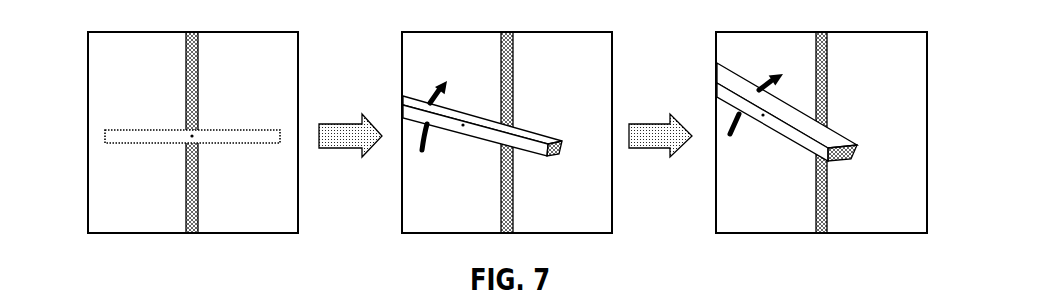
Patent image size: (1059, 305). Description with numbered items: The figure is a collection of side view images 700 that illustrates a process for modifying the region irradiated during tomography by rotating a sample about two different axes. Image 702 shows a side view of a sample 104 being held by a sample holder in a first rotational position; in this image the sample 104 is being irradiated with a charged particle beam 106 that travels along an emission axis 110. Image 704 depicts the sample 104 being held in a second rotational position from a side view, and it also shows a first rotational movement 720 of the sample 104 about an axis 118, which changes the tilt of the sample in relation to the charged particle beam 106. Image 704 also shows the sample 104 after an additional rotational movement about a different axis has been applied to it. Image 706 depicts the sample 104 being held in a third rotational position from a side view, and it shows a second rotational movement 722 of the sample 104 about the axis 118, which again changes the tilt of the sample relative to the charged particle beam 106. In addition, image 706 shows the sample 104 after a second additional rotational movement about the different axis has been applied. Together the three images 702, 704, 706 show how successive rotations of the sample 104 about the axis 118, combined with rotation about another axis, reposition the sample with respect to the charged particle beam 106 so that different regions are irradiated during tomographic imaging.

The collection of side view images 700 is at (88, 16).
The image 702 is at (286, 19).
The image 704 is at (604, 18).
The image 706 is at (919, 18).
The charged particle beam 106 is at (202, 83).
The sample 104 is at (247, 129).
The emission axis 110 is at (192, 48).
The axis 118 is at (463, 127).
The first rotational movement 720 is at (437, 78).
The second rotational movement 722 is at (771, 67).